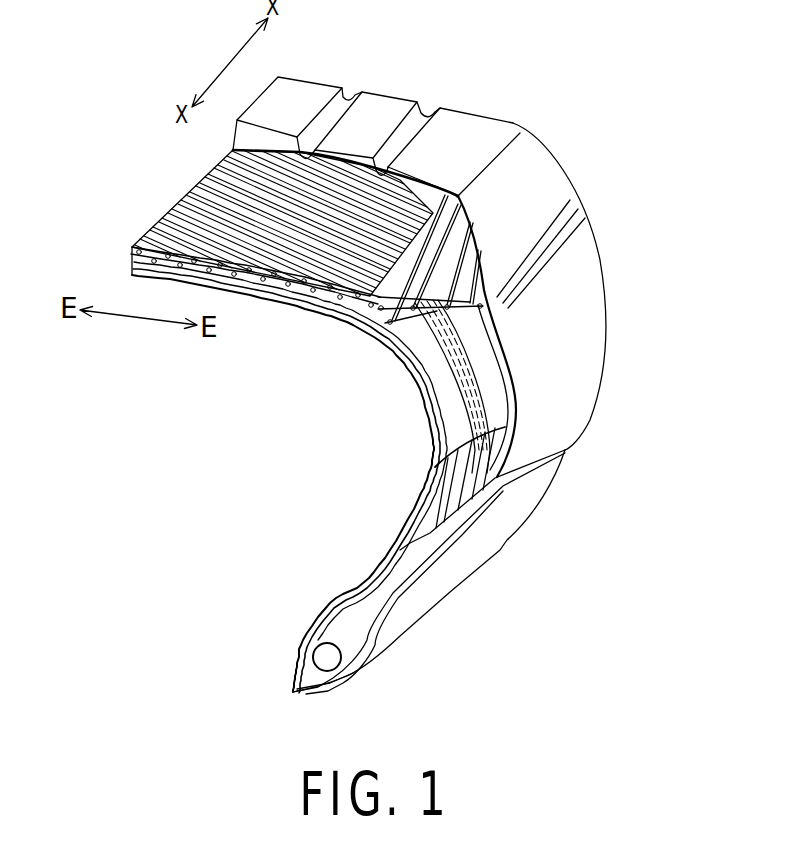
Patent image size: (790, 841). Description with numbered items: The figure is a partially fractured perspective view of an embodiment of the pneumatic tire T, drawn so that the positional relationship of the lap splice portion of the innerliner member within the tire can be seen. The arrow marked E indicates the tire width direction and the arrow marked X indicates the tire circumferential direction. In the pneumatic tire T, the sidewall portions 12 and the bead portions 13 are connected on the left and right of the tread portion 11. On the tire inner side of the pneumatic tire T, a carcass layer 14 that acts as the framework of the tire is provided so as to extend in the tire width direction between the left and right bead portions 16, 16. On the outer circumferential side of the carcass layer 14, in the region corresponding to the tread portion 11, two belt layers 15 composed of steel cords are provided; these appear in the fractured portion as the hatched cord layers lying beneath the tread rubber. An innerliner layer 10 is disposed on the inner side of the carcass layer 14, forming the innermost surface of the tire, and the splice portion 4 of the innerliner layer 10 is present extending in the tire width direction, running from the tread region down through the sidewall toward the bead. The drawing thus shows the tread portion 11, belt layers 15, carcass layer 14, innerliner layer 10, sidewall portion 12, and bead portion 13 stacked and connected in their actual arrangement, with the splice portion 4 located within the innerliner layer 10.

The pneumatic tire T is at (474, 102).
The splice portion 4 is at (466, 393).
The innerliner layer 10 is at (388, 347).
The tread portion 11 is at (390, 100).
The sidewall portion 12 is at (577, 293).
The bead portion 13 is at (372, 651).
The carcass layer 14 is at (253, 285).
The belt layer 15 is at (212, 192).
The bead portion 16 is at (325, 660).